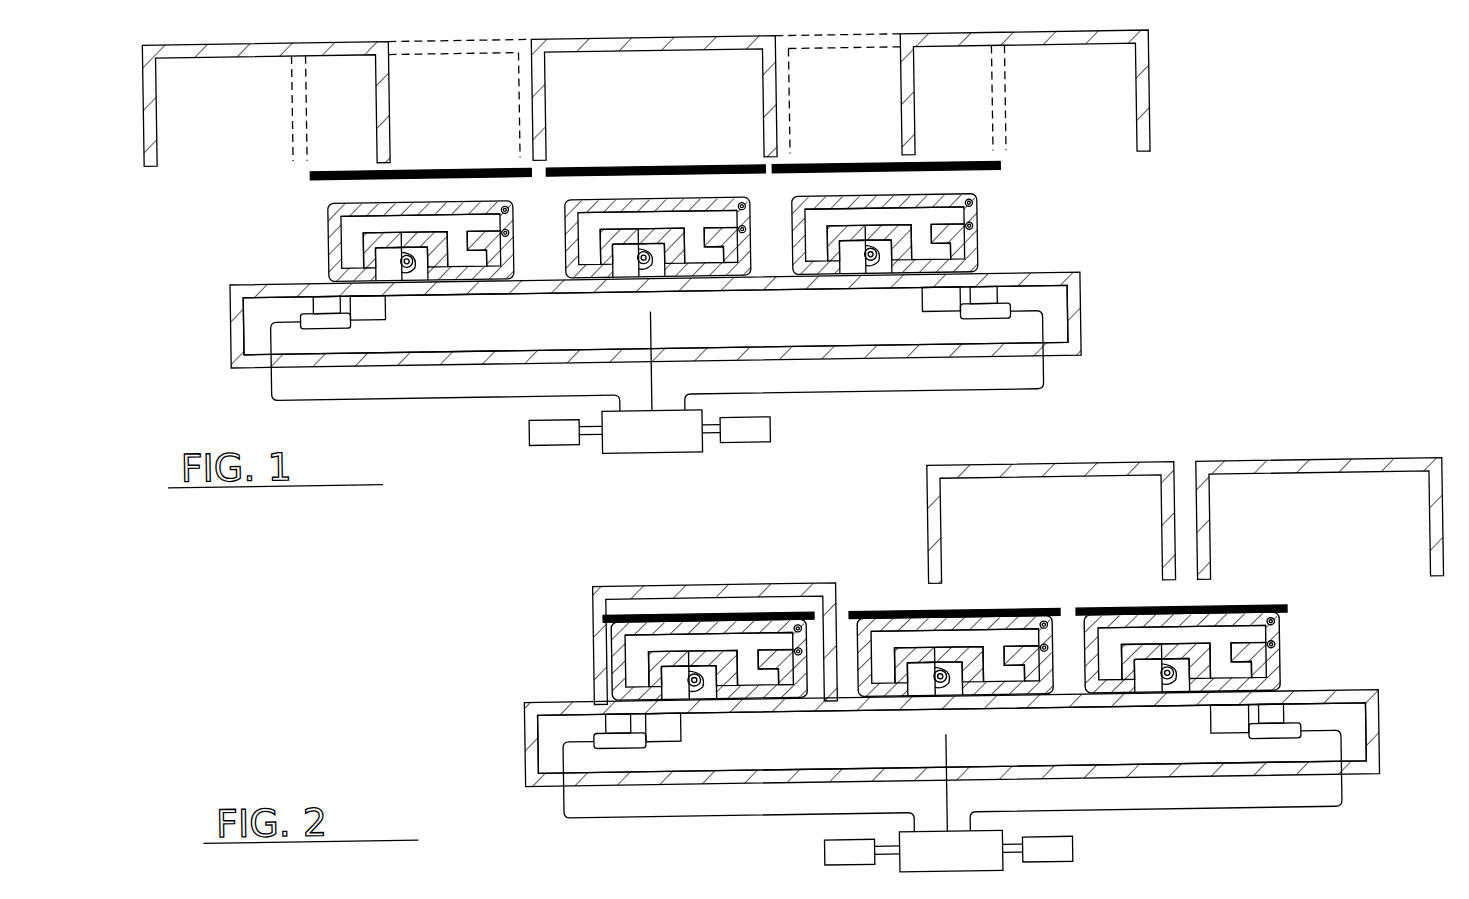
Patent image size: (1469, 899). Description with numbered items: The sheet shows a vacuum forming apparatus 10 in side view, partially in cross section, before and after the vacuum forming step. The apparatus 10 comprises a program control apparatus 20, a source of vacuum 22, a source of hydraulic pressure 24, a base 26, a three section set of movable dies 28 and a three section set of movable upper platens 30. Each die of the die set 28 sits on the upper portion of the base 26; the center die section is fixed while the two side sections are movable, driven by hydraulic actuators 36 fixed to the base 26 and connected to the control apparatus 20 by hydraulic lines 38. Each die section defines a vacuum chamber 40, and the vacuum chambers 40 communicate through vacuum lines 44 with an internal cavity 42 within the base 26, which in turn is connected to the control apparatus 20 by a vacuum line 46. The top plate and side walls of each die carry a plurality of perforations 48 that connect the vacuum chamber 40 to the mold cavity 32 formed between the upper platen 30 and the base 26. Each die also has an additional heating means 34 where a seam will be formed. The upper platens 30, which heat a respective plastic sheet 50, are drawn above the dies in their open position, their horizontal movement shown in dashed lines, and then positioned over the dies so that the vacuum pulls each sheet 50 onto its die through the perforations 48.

In FIG. 1, the vacuum forming apparatus 10 is at (1299, 112).
In FIG. 1, the program control apparatus 20 is at (620, 456).
In FIG. 2, the program control apparatus 20 is at (924, 850).
In FIG. 1, the source of vacuum 22 is at (770, 438).
In FIG. 2, the source of vacuum 22 is at (1064, 864).
In FIG. 1, the source of hydraulic pressure 24 is at (528, 436).
In FIG. 2, the source of hydraulic pressure 24 is at (824, 861).
In FIG. 1, the base 26 is at (1082, 322).
In FIG. 2, the base 26 is at (520, 733).
In FIG. 1, the set of movable dies 28 is at (664, 212).
In FIG. 1, the set of movable upper platens 30 is at (241, 52).
In FIG. 2, the set of movable upper platens 30 is at (758, 594).
In FIG. 1, the mold cavity 32 is at (274, 124).
In FIG. 2, the mold cavity 32 is at (616, 606).
In FIG. 1, the additional heating means 34 is at (505, 242).
In FIG. 1, the hydraulic actuators 36 is at (348, 325).
In FIG. 2, the hydraulic actuators 36 is at (634, 748).
In FIG. 1, the hydraulic lines 38 is at (268, 399).
In FIG. 2, the hydraulic lines 38 is at (606, 827).
In FIG. 1, the vacuum chamber 40 is at (452, 262).
In FIG. 2, the vacuum chamber 40 is at (1245, 684).
In FIG. 1, the internal cavity 42 is at (744, 341).
In FIG. 2, the internal cavity 42 is at (1096, 770).
In FIG. 1, the vacuum lines 44 is at (406, 272).
In FIG. 2, the vacuum lines 44 is at (694, 700).
In FIG. 1, the vacuum line 46 is at (651, 384).
In FIG. 2, the vacuum line 46 is at (940, 812).
In FIG. 1, the perforations 48 is at (331, 214).
In FIG. 2, the perforations 48 is at (620, 661).
In FIG. 1, the plastic sheet 50 is at (339, 180).